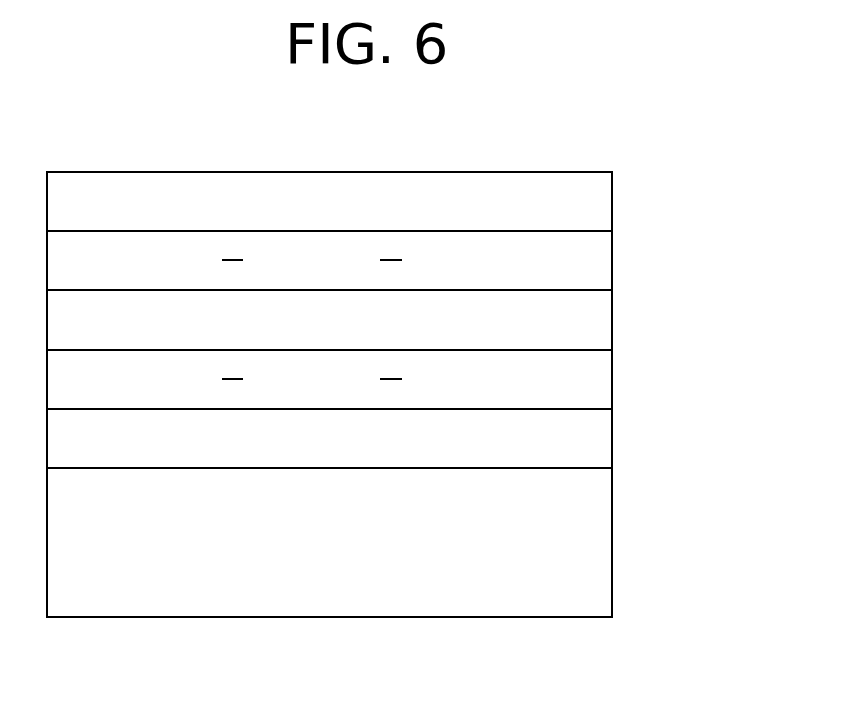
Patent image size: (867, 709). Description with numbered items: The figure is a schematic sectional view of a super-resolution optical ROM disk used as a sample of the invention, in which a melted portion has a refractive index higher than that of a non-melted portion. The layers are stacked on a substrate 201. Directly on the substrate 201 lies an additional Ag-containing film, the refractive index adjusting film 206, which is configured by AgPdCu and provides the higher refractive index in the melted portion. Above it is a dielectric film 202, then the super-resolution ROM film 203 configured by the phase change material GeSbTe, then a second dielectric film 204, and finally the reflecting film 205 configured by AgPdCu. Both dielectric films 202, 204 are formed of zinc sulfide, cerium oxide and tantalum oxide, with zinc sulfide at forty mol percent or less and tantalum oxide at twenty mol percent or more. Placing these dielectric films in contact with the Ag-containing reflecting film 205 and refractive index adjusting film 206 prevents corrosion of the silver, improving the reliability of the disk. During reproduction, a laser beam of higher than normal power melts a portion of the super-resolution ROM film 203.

The substrate 201 is at (612, 513).
The dielectric film 202 is at (612, 379).
The super-resolution ROM film 203 is at (612, 323).
The dielectric film 204 is at (612, 257).
The reflecting film 205 is at (612, 192).
The refractive index adjusting film 206 is at (612, 443).